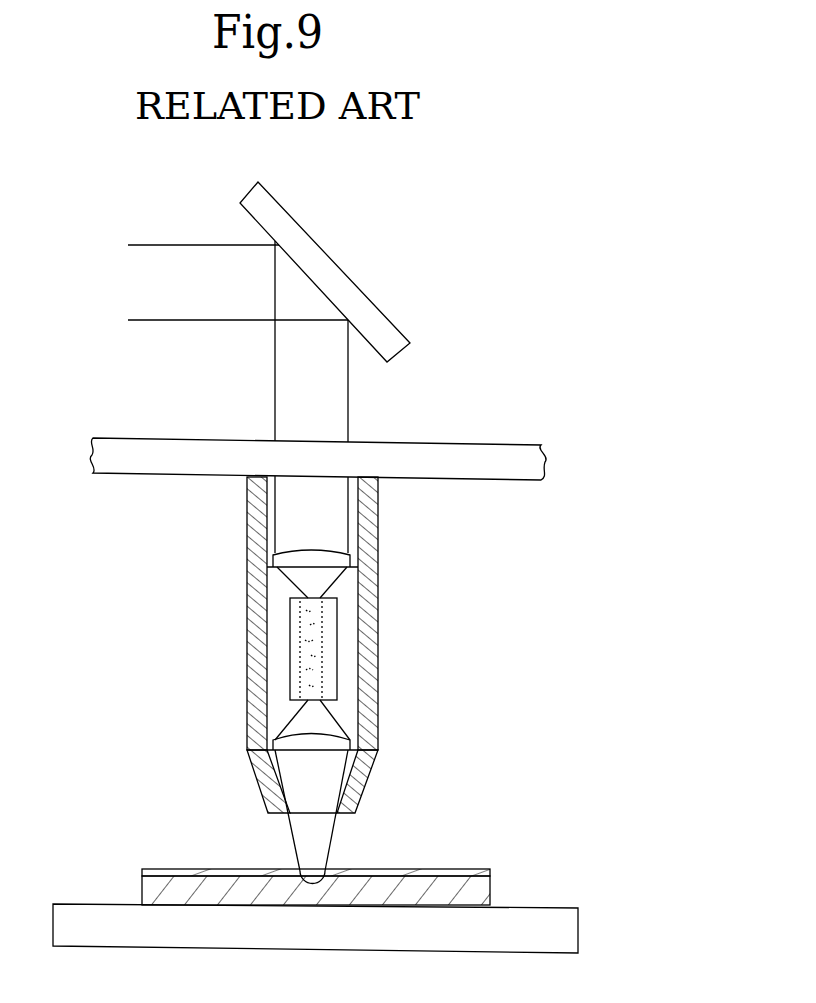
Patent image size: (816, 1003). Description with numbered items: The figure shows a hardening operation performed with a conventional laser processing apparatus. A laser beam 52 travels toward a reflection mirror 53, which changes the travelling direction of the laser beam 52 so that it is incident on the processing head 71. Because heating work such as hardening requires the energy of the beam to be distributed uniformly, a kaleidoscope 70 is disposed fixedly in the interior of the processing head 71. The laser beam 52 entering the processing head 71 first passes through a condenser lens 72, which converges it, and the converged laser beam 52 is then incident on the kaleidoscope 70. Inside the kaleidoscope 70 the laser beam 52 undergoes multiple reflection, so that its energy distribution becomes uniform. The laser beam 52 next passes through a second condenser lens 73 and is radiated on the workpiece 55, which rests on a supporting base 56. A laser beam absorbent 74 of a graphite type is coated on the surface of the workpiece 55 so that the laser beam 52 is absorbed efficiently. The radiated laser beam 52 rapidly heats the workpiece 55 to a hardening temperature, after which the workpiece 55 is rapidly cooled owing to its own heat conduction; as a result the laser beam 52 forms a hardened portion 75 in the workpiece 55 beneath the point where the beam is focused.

The laser beam 52 is at (275, 397).
The reflection mirror 53 is at (333, 283).
The workpiece 55 is at (475, 895).
The base table 56 is at (584, 921).
The kaleidoscope 70 is at (318, 665).
The processing head 71 is at (377, 683).
The condenser lens 72 is at (333, 558).
The condenser lens 73 is at (313, 743).
The laser beam absorbent 74 is at (418, 872).
The hardened portion 75 is at (312, 884).